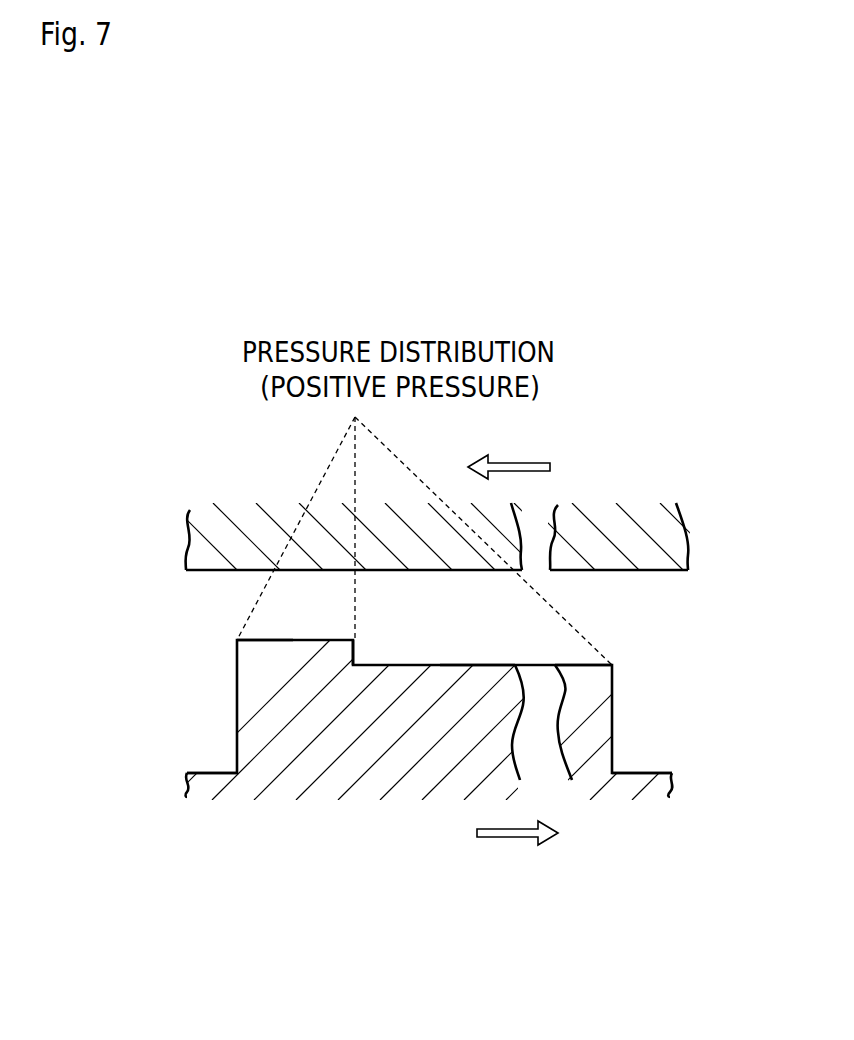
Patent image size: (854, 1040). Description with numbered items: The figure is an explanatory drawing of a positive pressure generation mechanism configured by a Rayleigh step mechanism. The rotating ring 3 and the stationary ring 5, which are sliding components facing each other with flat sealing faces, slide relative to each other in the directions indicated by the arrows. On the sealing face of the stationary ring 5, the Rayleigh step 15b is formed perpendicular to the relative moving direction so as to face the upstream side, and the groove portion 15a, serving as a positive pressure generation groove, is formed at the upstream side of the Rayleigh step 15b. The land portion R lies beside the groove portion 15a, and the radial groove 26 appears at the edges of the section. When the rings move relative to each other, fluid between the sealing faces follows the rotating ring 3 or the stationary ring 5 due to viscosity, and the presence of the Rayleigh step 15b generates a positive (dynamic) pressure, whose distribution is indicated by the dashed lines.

The rotating ring 3 is at (233, 512).
The stationary ring 5 is at (362, 793).
The land portion R is at (293, 640).
The Rayleigh step 15b is at (357, 647).
The groove portion 15a is at (497, 665).
The radial groove 26 is at (187, 773).